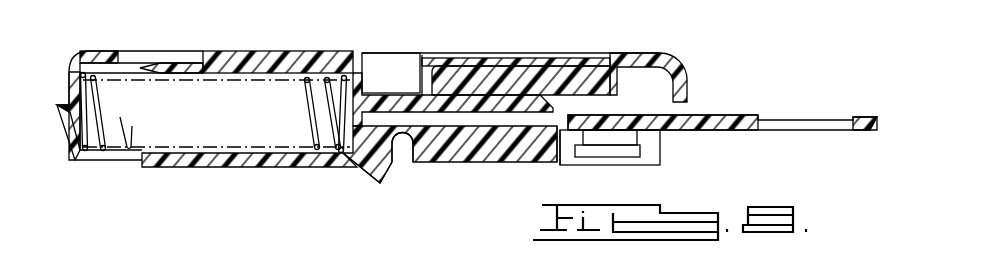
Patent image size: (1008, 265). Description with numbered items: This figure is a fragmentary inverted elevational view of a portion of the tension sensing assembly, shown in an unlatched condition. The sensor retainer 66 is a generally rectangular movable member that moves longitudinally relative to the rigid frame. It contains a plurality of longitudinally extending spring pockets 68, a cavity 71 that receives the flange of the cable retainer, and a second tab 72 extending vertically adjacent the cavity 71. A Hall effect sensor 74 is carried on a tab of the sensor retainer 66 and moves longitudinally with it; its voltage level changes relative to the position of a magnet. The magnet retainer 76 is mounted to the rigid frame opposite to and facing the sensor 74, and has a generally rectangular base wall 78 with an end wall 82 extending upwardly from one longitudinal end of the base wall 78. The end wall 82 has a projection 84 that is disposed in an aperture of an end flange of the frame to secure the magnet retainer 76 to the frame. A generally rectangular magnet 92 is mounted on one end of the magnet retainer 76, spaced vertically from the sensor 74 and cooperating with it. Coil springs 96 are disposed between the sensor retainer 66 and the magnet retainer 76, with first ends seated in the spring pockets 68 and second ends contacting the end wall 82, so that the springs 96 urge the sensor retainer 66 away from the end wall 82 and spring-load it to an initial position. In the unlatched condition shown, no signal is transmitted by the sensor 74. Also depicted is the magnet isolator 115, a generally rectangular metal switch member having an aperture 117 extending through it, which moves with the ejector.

The sensor retainer 66 is at (443, 150).
The spring pockets 68 is at (180, 148).
The cavity 71 is at (400, 153).
The second tab 72 is at (383, 180).
The sensor 74 is at (623, 137).
The magnet retainer 76 is at (477, 60).
The base wall 78 is at (540, 63).
The end wall 82 is at (82, 156).
The projection 84 is at (57, 112).
The magnet 92 is at (592, 65).
The springs 96 is at (308, 107).
The magnet isolator 115 is at (732, 130).
The aperture 117 is at (843, 118).